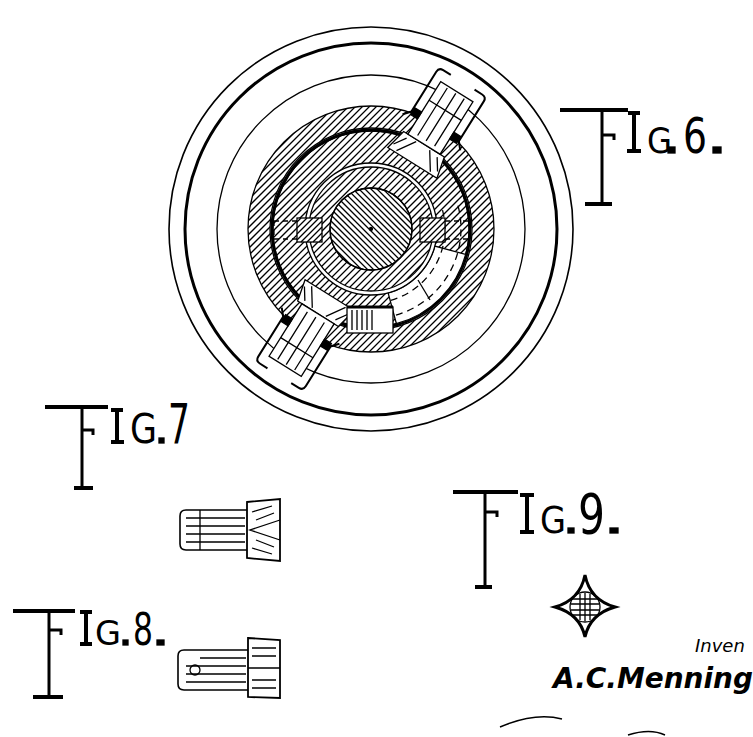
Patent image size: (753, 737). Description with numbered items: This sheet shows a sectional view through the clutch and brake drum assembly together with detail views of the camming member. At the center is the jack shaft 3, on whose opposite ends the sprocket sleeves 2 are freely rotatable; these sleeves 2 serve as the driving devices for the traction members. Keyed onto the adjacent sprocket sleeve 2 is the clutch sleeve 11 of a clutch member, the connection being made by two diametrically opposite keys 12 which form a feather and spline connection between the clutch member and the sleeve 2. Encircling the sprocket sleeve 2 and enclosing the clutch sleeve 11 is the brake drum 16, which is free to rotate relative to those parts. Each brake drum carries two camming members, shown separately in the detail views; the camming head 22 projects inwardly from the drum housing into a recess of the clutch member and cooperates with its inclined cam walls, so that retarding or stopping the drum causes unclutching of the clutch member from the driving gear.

In FIG. 6, the sprocket sleeve 2 is at (423, 240).
In FIG. 6, the jack shaft 3 is at (413, 277).
In FIG. 6, the clutch sleeve 11 is at (357, 143).
In FIG. 6, the key 12 is at (445, 215).
In FIG. 6, the brake drum 16 is at (487, 72).
In FIG. 6, the camming head 22 is at (403, 147).
In FIG. 7, the camming head 22 is at (236, 523).
In FIG. 8, the camming head 22 is at (233, 660).